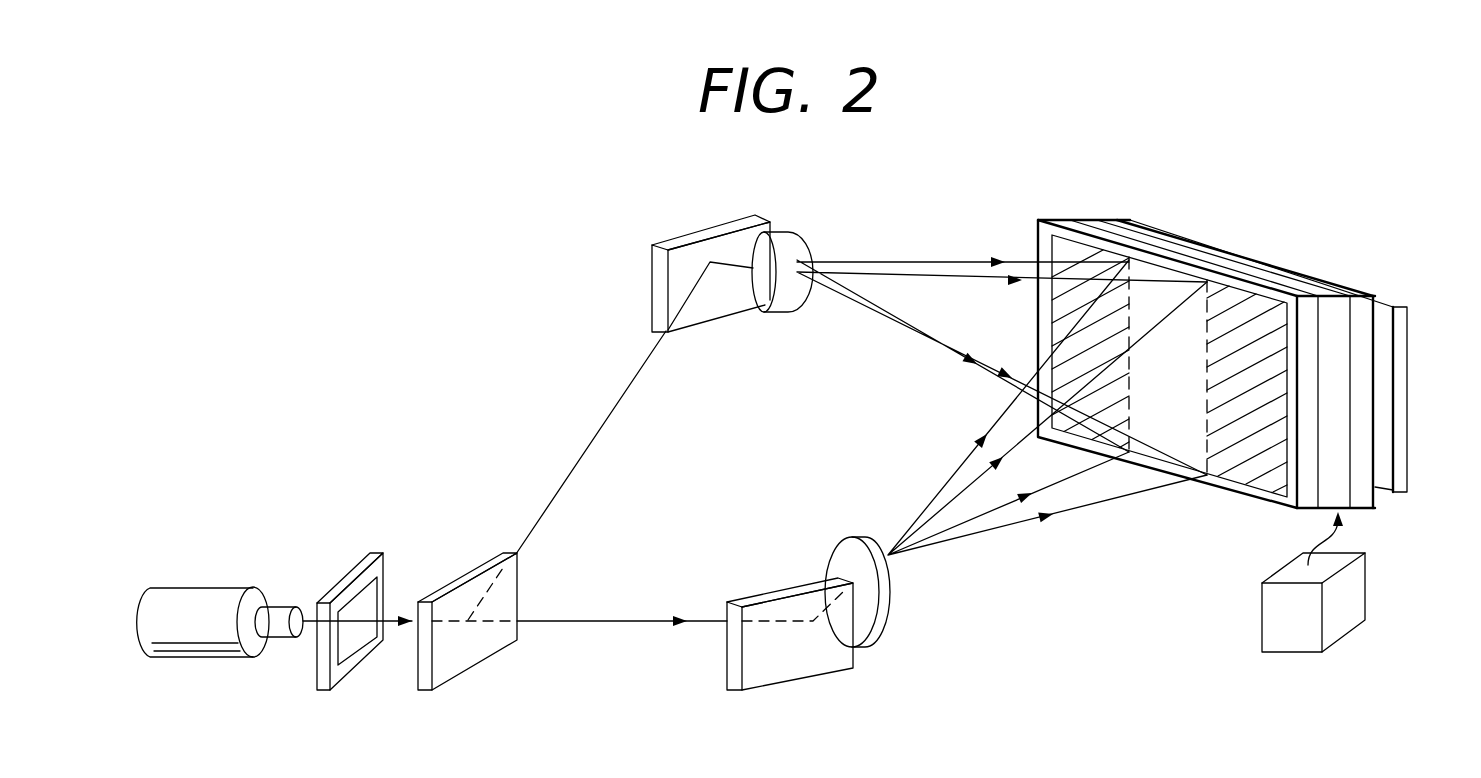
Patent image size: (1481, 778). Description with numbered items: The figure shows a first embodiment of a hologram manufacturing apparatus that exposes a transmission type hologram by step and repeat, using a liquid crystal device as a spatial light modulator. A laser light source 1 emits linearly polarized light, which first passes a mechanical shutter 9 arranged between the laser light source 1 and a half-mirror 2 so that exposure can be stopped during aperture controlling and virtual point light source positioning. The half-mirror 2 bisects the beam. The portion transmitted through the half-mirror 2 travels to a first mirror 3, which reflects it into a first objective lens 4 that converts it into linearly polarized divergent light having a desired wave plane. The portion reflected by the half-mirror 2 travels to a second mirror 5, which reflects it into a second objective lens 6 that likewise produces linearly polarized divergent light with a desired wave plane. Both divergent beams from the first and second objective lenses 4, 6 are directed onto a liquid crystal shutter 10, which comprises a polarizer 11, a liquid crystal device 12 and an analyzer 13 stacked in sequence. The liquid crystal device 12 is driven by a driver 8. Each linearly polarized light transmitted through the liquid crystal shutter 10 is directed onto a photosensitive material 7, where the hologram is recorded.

The laser light source 1 is at (222, 600).
The half-mirror 2 is at (462, 600).
The first mirror 3 is at (800, 608).
The first objective lens 4 is at (855, 555).
The second mirror 5 is at (683, 255).
The second objective lens 6 is at (797, 245).
The photosensitive material 7 is at (1405, 330).
The driver 8 is at (1350, 590).
The mechanical shutter 9 is at (355, 560).
The liquid crystal shutter 10 is at (1318, 248).
The polarizer 11 is at (1305, 305).
The liquid crystal device 12 is at (1337, 492).
The analyzer 13 is at (1365, 467).